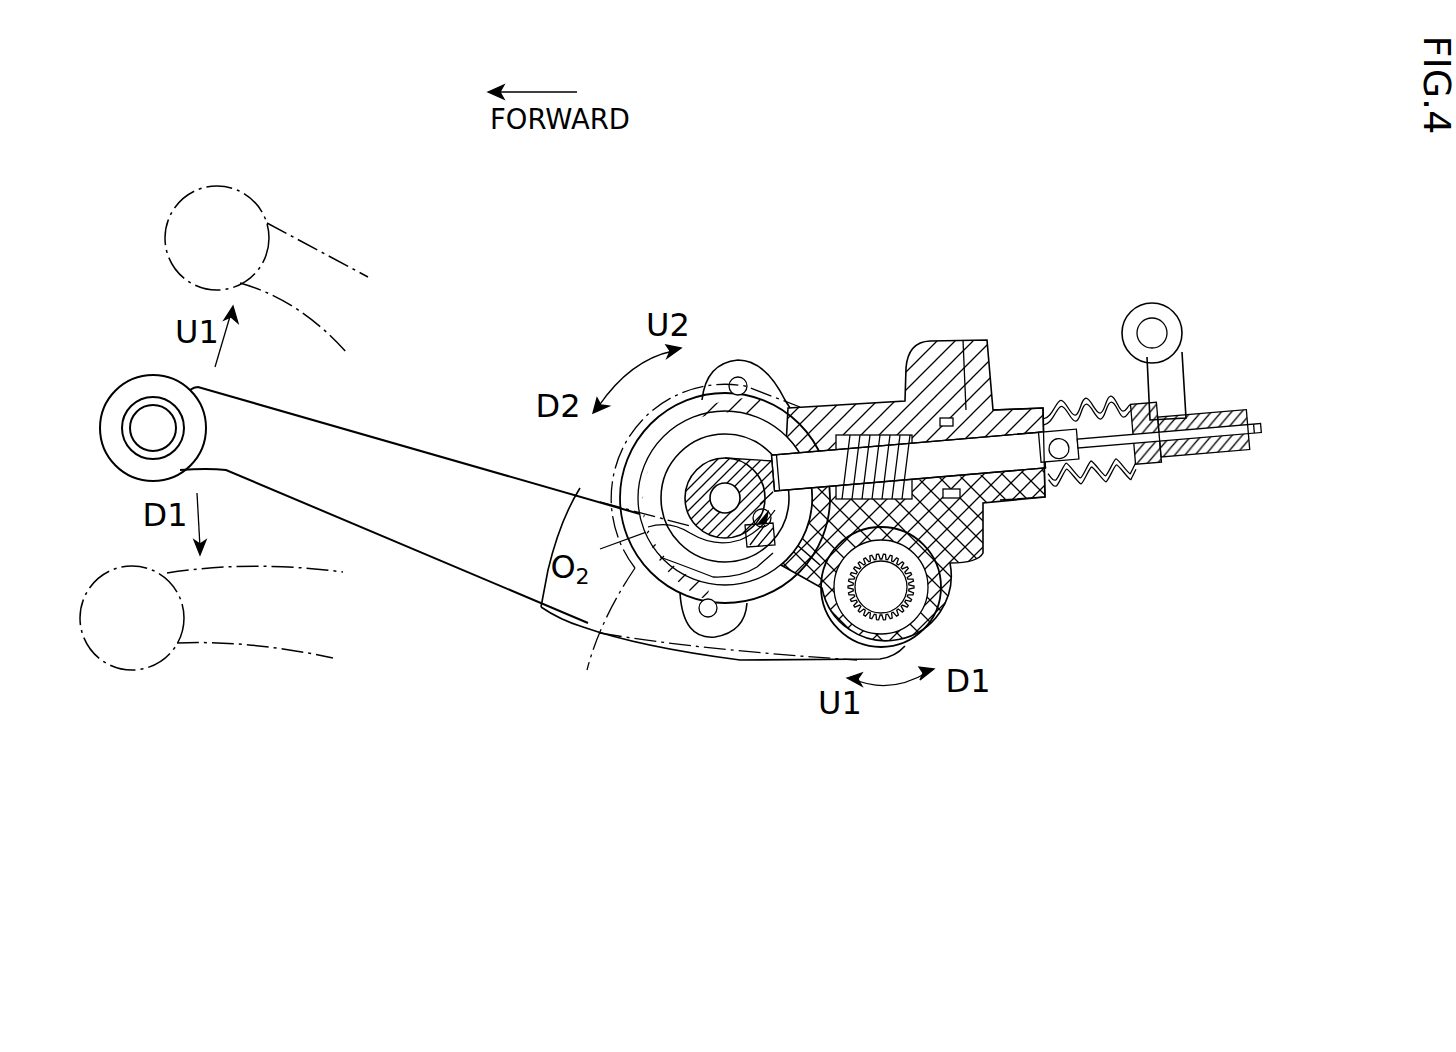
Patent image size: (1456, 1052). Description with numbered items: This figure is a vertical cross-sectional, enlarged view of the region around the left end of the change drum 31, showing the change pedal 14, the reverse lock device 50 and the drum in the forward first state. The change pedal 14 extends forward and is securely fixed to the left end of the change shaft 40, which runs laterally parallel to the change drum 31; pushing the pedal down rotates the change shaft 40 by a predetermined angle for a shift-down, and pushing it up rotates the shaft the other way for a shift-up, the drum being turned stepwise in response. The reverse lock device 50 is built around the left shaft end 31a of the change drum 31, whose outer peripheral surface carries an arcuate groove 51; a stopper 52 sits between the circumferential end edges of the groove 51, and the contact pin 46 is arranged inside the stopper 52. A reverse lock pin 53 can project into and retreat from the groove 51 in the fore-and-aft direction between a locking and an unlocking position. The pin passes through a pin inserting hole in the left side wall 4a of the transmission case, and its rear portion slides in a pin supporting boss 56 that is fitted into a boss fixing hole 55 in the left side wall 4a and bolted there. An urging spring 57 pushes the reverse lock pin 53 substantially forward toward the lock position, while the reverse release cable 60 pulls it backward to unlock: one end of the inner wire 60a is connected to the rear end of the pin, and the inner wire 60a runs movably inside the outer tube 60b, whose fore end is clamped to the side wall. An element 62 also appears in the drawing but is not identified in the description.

The change pedal 14 is at (265, 206).
The change drum 31 is at (702, 529).
The left shaft end 31a is at (705, 480).
The change shaft 40 is at (930, 613).
The contact pin 46 is at (762, 530).
The reverse lock device 50 is at (822, 412).
The arcuate groove 51 is at (667, 565).
The stopper 52 is at (752, 545).
The reverse lock pin 53 is at (812, 455).
The boss fixing hole 55 is at (887, 432).
The pin supporting boss 56 is at (997, 510).
The urging spring 57 is at (867, 434).
The reverse release cable 60 is at (1232, 450).
The inner wire 60a is at (1117, 477).
The outer tube 60b is at (1213, 452).
The lever 62 is at (1170, 377).
The left side wall 4a is at (987, 563).